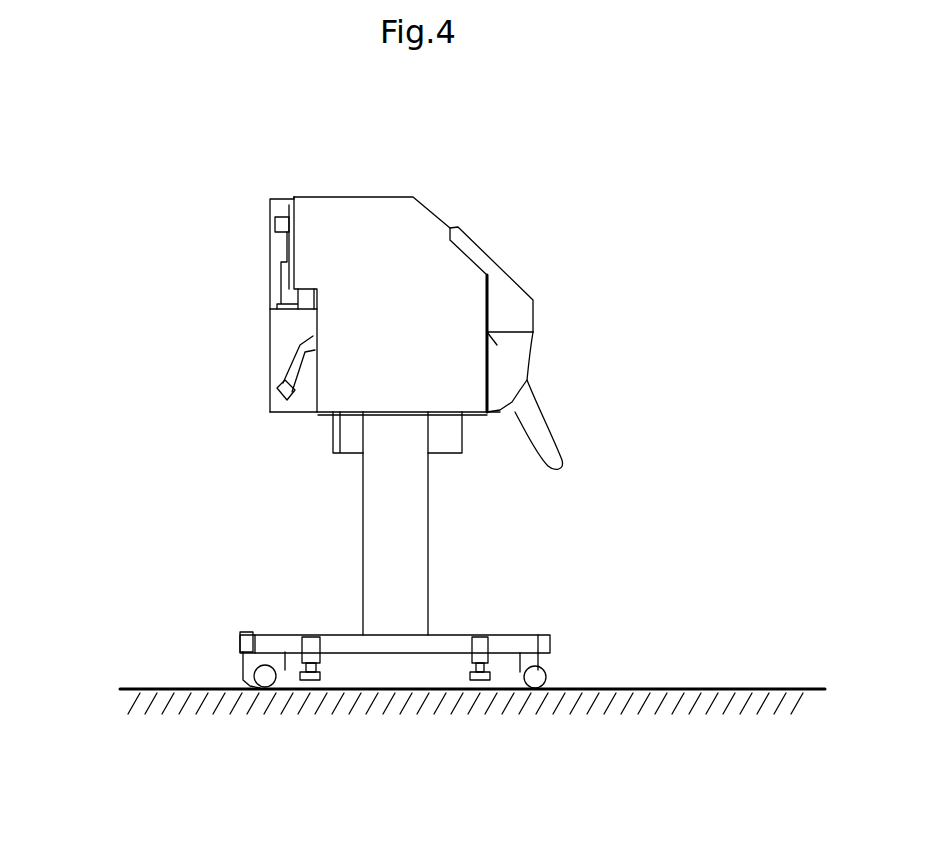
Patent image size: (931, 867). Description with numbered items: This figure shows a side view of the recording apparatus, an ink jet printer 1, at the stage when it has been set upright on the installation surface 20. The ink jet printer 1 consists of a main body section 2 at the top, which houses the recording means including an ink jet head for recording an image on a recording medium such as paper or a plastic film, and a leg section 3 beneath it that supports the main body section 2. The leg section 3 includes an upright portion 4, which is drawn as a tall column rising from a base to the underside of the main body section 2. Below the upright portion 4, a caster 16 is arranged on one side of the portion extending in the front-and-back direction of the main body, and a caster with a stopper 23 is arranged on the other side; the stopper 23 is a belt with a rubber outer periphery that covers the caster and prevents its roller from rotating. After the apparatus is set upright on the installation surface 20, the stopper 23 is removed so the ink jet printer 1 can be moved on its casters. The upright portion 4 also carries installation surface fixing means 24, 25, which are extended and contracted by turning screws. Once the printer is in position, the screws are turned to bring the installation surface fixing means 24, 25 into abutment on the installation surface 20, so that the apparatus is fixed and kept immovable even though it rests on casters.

The ink jet printer 1 is at (532, 227).
The main body section 2 is at (360, 222).
The leg section 3 is at (465, 538).
The upright portion 4 is at (377, 530).
The caster 16 is at (550, 682).
The installation surface 20 is at (740, 688).
The stopper 23 is at (238, 672).
The installation surface fixing means 24 is at (484, 680).
The installation surface fixing means 25 is at (312, 680).